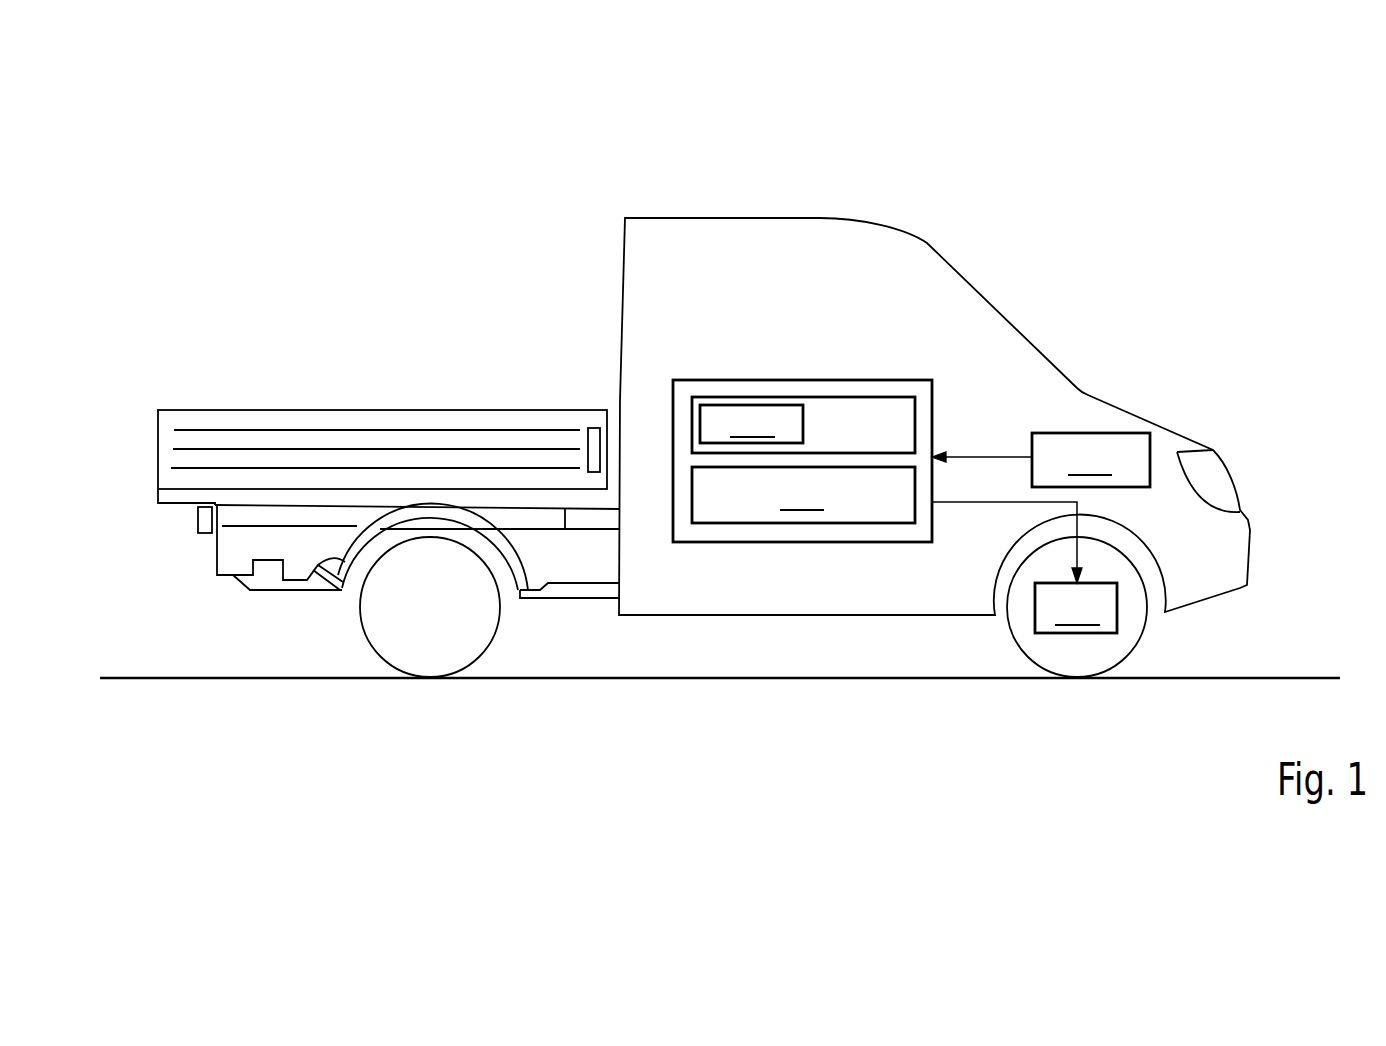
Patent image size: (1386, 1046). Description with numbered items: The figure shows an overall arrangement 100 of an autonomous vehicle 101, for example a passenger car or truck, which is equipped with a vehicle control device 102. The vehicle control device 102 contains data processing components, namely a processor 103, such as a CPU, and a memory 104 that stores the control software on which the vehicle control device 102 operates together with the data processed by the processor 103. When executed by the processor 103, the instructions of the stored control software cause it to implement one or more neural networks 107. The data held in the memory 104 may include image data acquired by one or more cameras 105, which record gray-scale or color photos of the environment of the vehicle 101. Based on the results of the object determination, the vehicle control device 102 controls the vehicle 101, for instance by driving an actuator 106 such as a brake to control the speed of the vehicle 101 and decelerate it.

The vehicle arrangement 100 is at (1062, 196).
The vehicle 101 is at (750, 218).
The vehicle control device 102 is at (800, 380).
The processor 103 is at (886, 385).
The memory 104 is at (803, 495).
The camera(s) 105 is at (1130, 450).
The actuator 106 is at (1110, 620).
The neural network(s) 107 is at (712, 420).